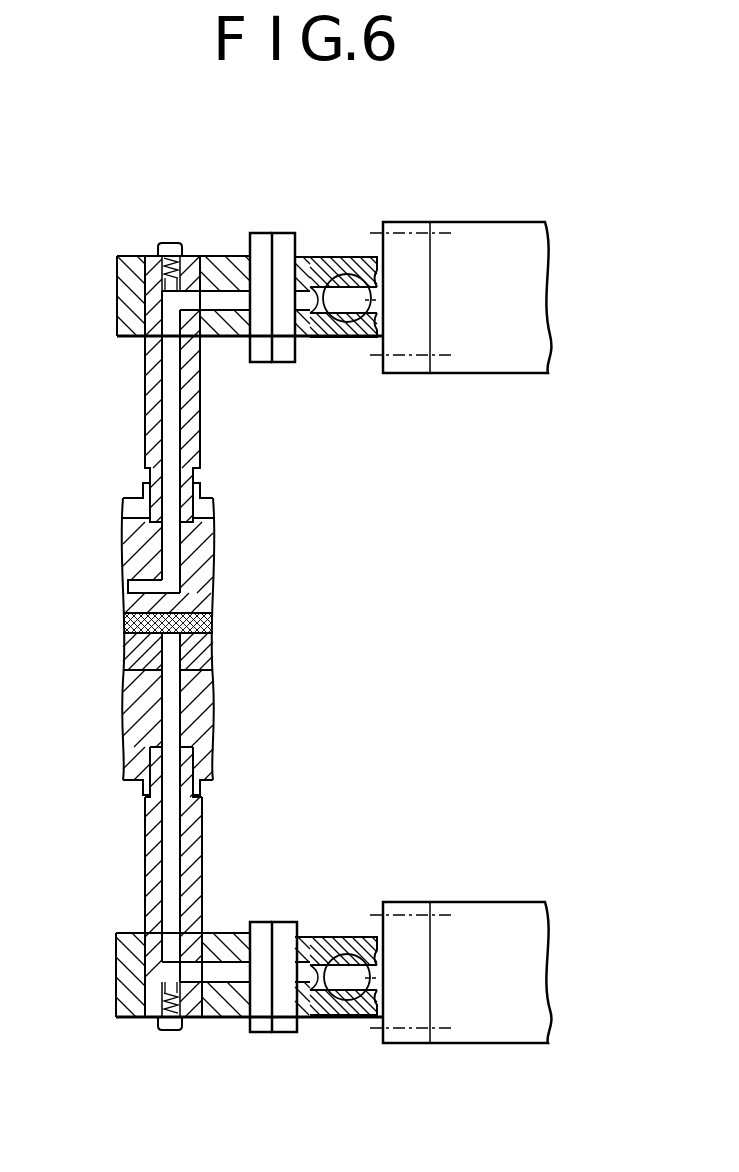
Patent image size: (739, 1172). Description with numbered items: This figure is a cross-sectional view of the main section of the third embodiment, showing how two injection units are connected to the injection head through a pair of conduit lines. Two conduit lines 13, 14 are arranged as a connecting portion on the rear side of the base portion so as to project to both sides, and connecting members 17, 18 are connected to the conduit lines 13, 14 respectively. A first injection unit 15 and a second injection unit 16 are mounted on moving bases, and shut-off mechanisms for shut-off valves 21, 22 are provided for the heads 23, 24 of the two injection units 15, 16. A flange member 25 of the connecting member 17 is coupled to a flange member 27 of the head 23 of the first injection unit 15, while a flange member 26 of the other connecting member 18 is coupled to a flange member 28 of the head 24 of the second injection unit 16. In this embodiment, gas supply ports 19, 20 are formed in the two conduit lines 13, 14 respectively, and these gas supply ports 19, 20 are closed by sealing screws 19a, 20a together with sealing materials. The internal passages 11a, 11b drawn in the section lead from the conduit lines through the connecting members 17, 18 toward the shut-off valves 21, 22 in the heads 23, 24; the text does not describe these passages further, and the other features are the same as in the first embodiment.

The first passage 11a is at (212, 302).
The second passage 11b is at (225, 975).
The conduit line 13 is at (145, 401).
The conduit line 14 is at (145, 875).
The first injection unit 15 is at (470, 230).
The second injection unit 16 is at (488, 1045).
The connecting member 17 is at (117, 291).
The connecting member 18 is at (212, 933).
The gas supply port 19 is at (163, 283).
The sealing screw 19a is at (172, 243).
The gas supply port 20 is at (145, 1017).
The sealing screw 20a is at (172, 1030).
The shut-off valve 21 is at (346, 275).
The shut-off valve 22 is at (348, 1017).
The head 23 is at (337, 340).
The head 24 is at (318, 1017).
The flange member 25 is at (259, 232).
The flange member 26 is at (268, 1032).
The flange member 27 is at (288, 232).
The flange member 28 is at (285, 922).